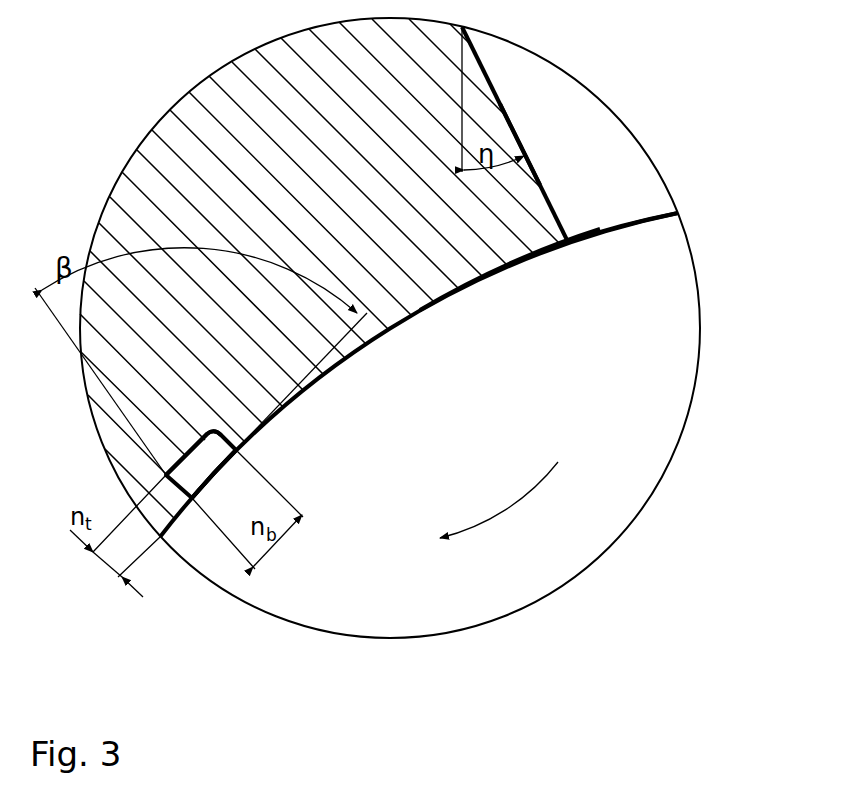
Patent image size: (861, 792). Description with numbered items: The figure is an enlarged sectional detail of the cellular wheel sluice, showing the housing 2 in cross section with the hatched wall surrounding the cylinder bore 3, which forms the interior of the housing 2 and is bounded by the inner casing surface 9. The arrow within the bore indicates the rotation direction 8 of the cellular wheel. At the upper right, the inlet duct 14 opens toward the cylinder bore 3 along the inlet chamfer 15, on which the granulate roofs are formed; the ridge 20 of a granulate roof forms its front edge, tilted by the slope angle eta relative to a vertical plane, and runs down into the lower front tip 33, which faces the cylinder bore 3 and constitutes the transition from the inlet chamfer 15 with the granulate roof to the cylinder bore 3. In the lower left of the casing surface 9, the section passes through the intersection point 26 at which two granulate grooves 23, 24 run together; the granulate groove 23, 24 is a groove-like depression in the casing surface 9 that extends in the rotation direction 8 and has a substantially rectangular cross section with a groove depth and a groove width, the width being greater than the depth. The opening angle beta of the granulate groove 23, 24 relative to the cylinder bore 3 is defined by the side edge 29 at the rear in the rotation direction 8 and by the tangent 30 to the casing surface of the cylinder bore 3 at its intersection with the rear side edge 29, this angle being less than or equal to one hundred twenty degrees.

The housing 2 is at (160, 142).
The cylinder bore 3 is at (479, 466).
The rotation direction 8 is at (532, 487).
The inner casing surface 9 is at (475, 282).
The inlet duct 14 is at (608, 176).
The inlet chamfer 15 is at (500, 93).
The ridge 20 is at (551, 203).
The first granulate groove 23 is at (185, 505).
The second granulate groove 24 is at (214, 474).
The intersection point 26 is at (178, 481).
The rear side edge 29 is at (202, 463).
The tangent 30 is at (275, 264).
The lower front tip 33 is at (568, 243).